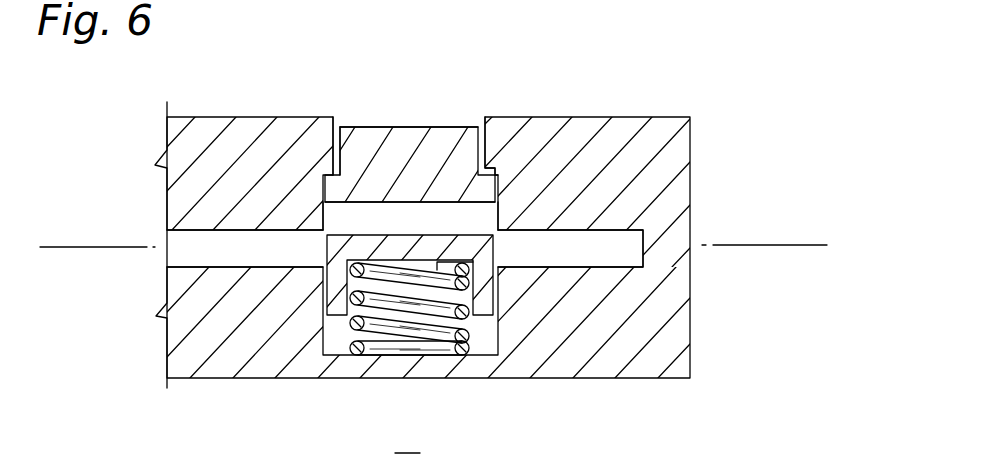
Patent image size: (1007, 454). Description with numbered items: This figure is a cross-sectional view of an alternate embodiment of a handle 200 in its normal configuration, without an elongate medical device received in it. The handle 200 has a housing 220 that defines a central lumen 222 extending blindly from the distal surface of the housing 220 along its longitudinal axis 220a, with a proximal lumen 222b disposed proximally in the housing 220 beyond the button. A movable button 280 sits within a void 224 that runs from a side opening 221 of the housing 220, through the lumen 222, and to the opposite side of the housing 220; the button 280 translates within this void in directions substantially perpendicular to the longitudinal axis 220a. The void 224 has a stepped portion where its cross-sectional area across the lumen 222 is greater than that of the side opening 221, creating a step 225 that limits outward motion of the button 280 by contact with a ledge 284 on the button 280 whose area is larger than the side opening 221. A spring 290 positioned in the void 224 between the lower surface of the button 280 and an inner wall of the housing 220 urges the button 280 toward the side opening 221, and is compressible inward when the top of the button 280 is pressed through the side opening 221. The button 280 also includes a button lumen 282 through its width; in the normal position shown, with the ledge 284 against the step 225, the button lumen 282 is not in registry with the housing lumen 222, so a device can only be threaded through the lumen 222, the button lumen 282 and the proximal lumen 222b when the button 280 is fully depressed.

The handle 200 is at (487, 78).
The housing 220 is at (637, 123).
The longitudinal axis 220a is at (760, 243).
The side opening 221 is at (378, 127).
The central lumen 222 is at (183, 245).
The proximal lumen 222b is at (607, 246).
The void 224 is at (407, 317).
The step 225 is at (492, 170).
The button 280 is at (417, 130).
The button lumen 282 is at (352, 217).
The ledge 284 is at (333, 175).
The spring 290 is at (467, 340).